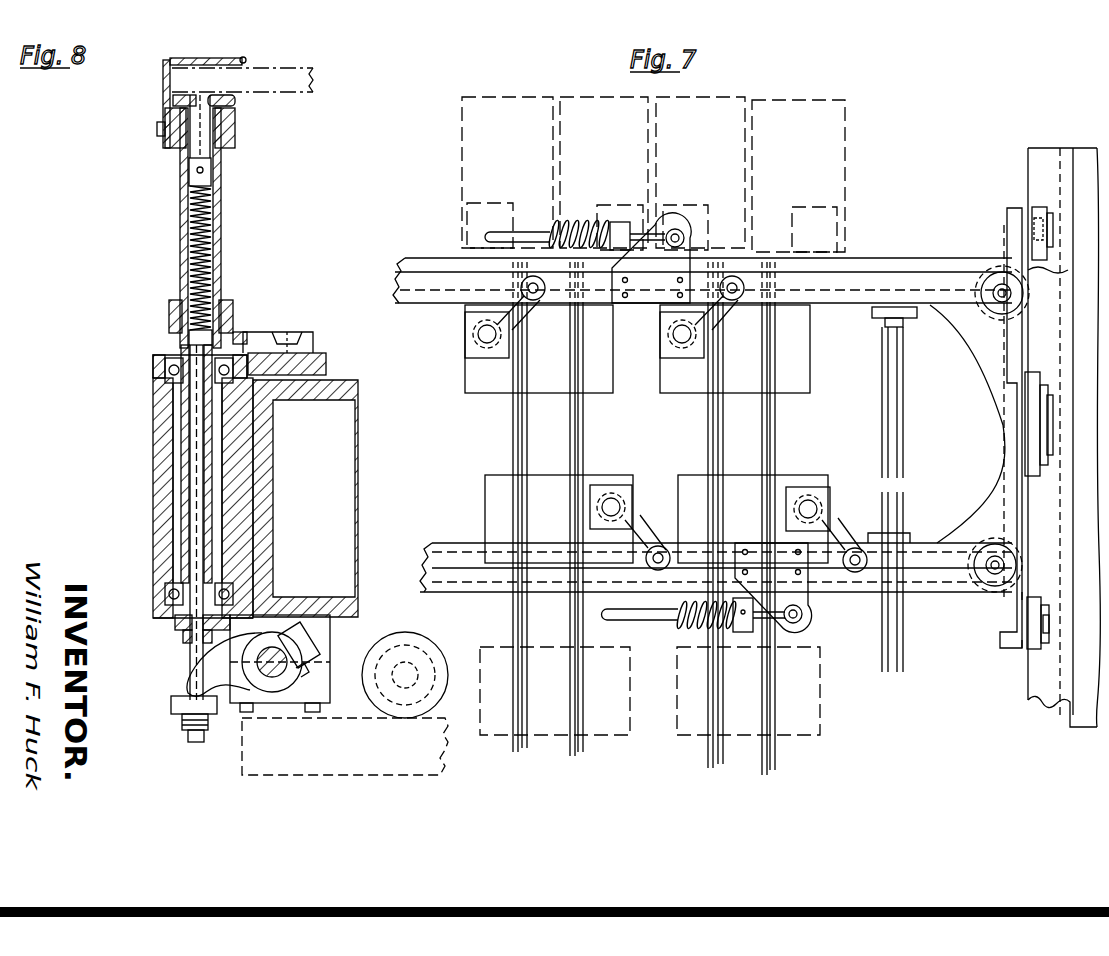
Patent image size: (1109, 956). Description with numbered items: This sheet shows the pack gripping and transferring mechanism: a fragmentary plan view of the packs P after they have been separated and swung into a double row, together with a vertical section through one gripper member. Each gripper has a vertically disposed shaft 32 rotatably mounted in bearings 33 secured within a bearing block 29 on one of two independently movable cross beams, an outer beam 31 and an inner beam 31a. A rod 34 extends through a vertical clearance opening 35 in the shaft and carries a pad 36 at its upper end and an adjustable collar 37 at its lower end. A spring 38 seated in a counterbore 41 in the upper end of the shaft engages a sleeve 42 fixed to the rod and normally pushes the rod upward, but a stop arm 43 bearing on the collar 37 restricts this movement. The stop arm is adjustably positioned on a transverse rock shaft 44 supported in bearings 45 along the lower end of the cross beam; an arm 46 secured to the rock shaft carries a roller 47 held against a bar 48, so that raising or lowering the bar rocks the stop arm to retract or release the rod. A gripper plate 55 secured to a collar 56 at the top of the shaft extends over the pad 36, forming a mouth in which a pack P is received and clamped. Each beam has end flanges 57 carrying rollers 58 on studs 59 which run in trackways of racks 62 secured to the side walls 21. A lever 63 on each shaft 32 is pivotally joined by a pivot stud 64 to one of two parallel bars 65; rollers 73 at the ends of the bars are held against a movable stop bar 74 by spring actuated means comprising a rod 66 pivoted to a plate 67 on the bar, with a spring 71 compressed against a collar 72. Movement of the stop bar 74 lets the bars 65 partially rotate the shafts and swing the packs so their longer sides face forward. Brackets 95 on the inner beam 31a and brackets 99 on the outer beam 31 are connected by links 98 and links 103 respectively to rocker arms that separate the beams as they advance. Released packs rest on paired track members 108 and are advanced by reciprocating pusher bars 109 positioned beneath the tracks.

In FIG. 7, the side wall 21 is at (1070, 722).
In FIG. 8, the bearing block 29 is at (155, 470).
In FIG. 8, the outer beam 31 is at (352, 472).
In FIG. 7, the outer beam 31 is at (890, 258).
In FIG. 7, the inner beam 31a is at (928, 600).
In FIG. 8, the shaft 32 is at (222, 268).
In FIG. 8, the bearings 33 is at (165, 372).
In FIG. 8, the rod 34 is at (196, 430).
In FIG. 8, the vertical clearance opening 35 is at (188, 510).
In FIG. 8, the pad 36 is at (236, 101).
In FIG. 8, the adjustable collar 37 is at (171, 705).
In FIG. 8, the spring 38 is at (190, 277).
In FIG. 8, the counterbore 41 is at (189, 252).
In FIG. 8, the sleeve 42 is at (189, 168).
In FIG. 8, the stop arm 43 is at (220, 652).
In FIG. 8, the transverse rock shaft 44 is at (272, 678).
In FIG. 8, the bearings 45 is at (310, 635).
In FIG. 8, the arm 46 is at (336, 700).
In FIG. 8, the roller 47 is at (367, 690).
In FIG. 8, the bar 48 is at (438, 718).
In FIG. 8, the gripper plate 55 is at (180, 60).
In FIG. 7, the gripper plate 55 is at (510, 346).
In FIG. 8, the collar 56 is at (237, 132).
In FIG. 7, the end flange 57 is at (1006, 214).
In FIG. 7, the roller 58 is at (1035, 208).
In FIG. 7, the stud 59 is at (1053, 230).
In FIG. 7, the rack 62 is at (1010, 585).
In FIG. 8, the lever 63 is at (240, 330).
In FIG. 7, the lever 63 is at (508, 286).
In FIG. 8, the pivot stud 64 is at (308, 332).
In FIG. 7, the pivot stud 64 is at (536, 300).
In FIG. 8, the bar 65 is at (326, 360).
In FIG. 7, the bar 65 is at (438, 258).
In FIG. 7, the rod 66 is at (530, 230).
In FIG. 7, the plate 67 is at (688, 236).
In FIG. 7, the spring 71 is at (574, 224).
In FIG. 7, the collar 72 is at (742, 634).
In FIG. 7, the roller 73 is at (1000, 303).
In FIG. 7, the stop bar 74 is at (1070, 295).
In FIG. 7, the bracket 95 is at (908, 538).
In FIG. 7, the link 98 is at (885, 672).
In FIG. 7, the bracket 99 is at (876, 318).
In FIG. 7, the link 103 is at (903, 440).
In FIG. 7, the track member 108 is at (513, 426).
In FIG. 7, the pusher bar 109 is at (578, 440).
In FIG. 8, the pack P is at (268, 68).
In FIG. 7, the pack P is at (462, 170).